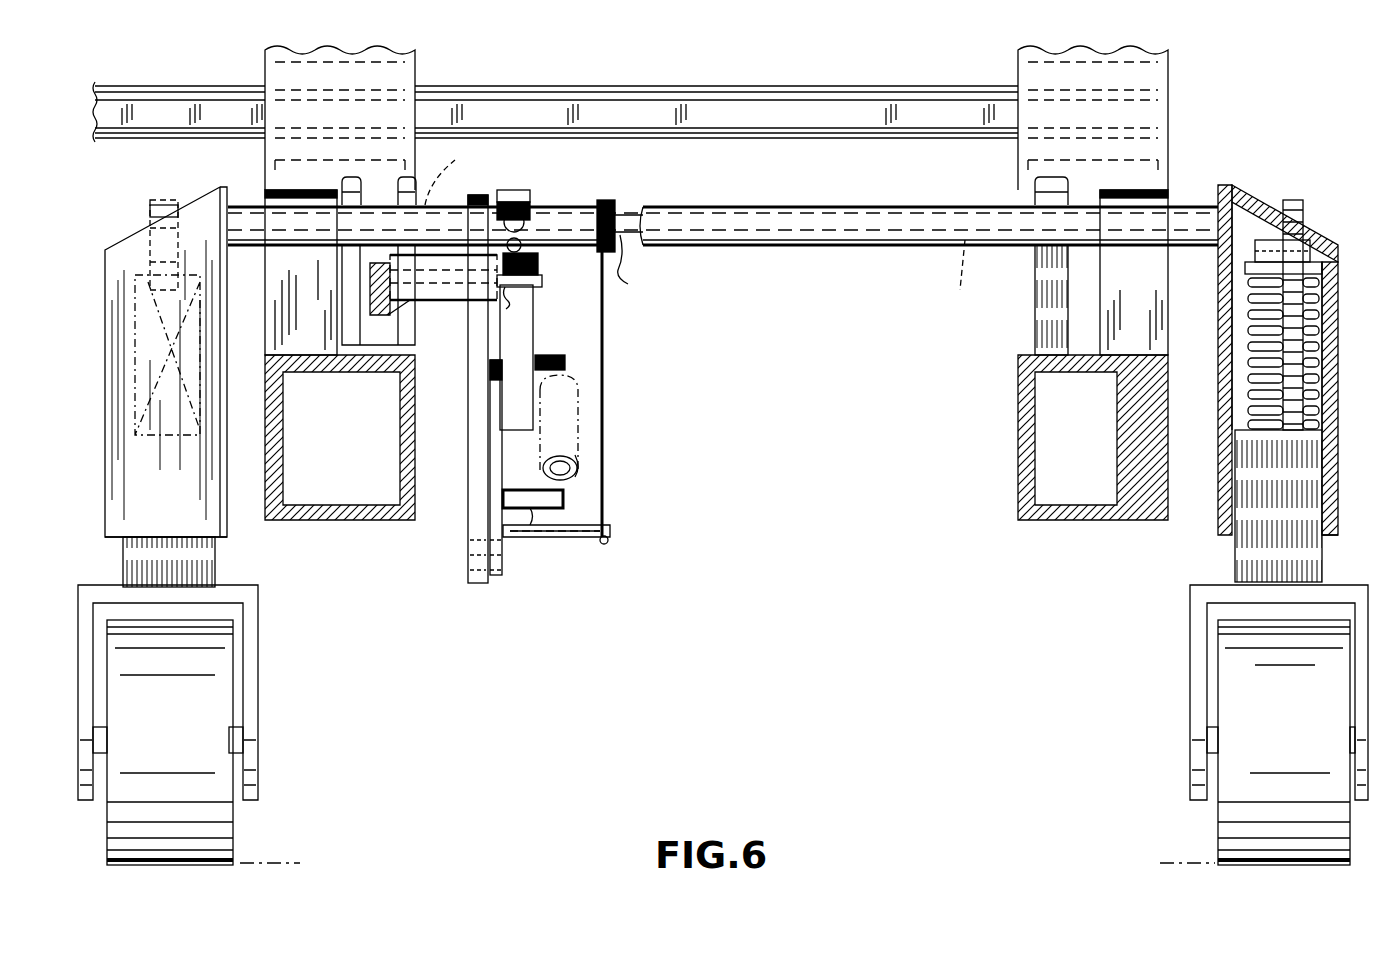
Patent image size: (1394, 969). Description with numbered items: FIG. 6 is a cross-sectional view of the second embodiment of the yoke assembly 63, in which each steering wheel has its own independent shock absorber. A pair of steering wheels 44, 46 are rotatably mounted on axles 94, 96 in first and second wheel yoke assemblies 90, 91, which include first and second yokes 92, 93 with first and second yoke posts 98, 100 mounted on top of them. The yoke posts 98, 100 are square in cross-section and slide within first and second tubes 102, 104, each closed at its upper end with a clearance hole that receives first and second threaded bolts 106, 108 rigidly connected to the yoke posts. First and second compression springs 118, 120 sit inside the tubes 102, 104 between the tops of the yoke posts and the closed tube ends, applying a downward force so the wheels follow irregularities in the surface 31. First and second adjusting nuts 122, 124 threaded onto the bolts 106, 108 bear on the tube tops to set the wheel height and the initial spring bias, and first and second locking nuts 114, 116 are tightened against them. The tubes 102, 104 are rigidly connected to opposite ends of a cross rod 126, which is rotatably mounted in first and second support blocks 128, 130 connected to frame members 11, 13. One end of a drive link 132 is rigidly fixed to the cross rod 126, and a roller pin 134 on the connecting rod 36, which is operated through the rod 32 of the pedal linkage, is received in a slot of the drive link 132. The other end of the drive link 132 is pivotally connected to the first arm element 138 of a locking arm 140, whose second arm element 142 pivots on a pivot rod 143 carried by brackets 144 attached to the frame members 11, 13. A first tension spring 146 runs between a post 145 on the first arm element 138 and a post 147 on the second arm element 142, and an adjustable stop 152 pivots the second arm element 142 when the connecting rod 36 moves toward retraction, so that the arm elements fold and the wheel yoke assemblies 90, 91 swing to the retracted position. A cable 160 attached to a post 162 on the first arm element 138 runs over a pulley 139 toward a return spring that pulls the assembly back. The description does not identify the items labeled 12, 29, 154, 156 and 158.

The frame member 11 is at (365, 520).
The apparatus 12 is at (1235, 102).
The frame member 13 is at (1060, 520).
The direction of travel 29 is at (640, 762).
The surface 31 is at (278, 864).
The rod 32 is at (640, 108).
The connecting rod 36 is at (372, 355).
The steering wheel 44 is at (172, 760).
The steering wheel 46 is at (1296, 760).
The yoke assembly 63 is at (770, 640).
The first wheel yoke assembly 90 is at (284, 680).
The second wheel yoke assembly 91 is at (1138, 673).
The first yoke 92 is at (244, 595).
The second yoke 93 is at (1203, 600).
The axle 94 is at (235, 736).
The axle 96 is at (1210, 740).
The first yoke post 98 is at (203, 570).
The second yoke post 100 is at (1289, 546).
The first tube 102 is at (110, 525).
The second tube 104 is at (1218, 480).
The first threaded bolt 106 is at (158, 204).
The second threaded bolt 108 is at (1293, 205).
The first locking nut 114 is at (150, 235).
The second locking nut 116 is at (1300, 240).
The first compression spring 118 is at (110, 418).
The second compression spring 120 is at (1322, 350).
The first adjusting nut 122 is at (115, 232).
The second adjusting nut 124 is at (1310, 252).
The cross rod 126 is at (780, 247).
The first support block 128 is at (318, 258).
The second support block 130 is at (1150, 252).
The drive link 132 is at (475, 440).
The roller pin 134 is at (462, 302).
The first arm element 138 is at (495, 468).
The pulley 139 is at (612, 206).
The locking arm 140 is at (487, 622).
The second arm element 142 is at (522, 342).
The pivot rod 143 is at (706, 224).
The bracket 144 is at (366, 190).
The post 145 is at (534, 536).
The first tension spring 146 is at (582, 450).
The post 147 is at (565, 362).
The adjustable stop 152 is at (605, 265).
The clamp 154 is at (528, 302).
The collar 156 is at (597, 275).
The bracket 158 is at (525, 212).
The cable 160 is at (606, 402).
The post 162 is at (584, 537).